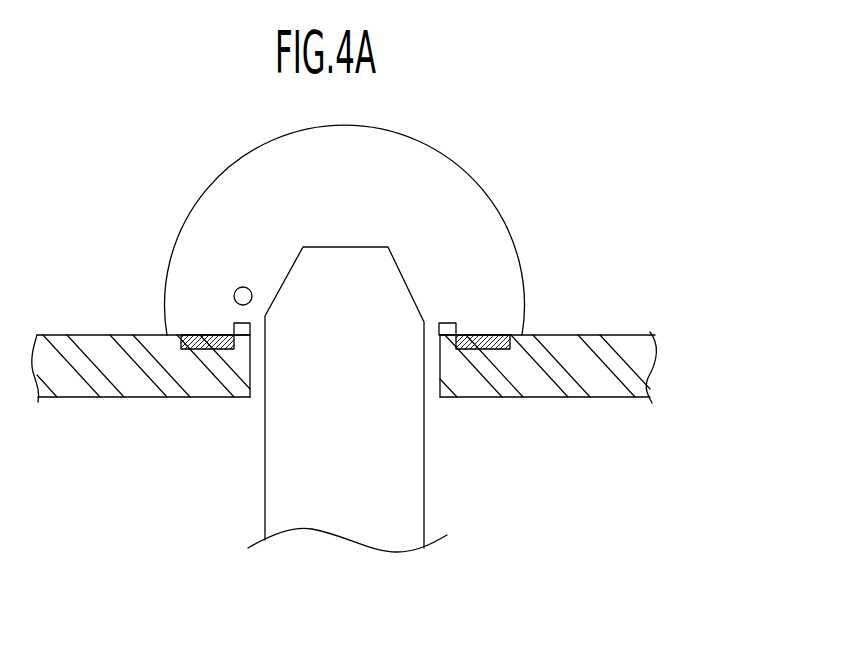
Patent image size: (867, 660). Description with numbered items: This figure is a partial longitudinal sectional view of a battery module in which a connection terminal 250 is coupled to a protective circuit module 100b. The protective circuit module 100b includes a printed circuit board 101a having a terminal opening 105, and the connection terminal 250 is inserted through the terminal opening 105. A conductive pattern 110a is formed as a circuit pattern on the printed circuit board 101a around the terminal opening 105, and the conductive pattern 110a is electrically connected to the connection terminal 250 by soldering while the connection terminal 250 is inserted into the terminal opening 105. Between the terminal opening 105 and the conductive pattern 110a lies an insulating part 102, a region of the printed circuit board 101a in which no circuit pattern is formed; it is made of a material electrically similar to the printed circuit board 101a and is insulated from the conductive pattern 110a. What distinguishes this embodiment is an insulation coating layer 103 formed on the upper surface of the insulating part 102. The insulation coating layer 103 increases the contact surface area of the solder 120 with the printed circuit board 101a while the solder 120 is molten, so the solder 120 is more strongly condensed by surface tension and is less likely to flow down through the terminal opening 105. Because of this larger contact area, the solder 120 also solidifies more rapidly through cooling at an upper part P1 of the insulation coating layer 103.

The protective circuit module 100b is at (622, 298).
The printed circuit board 101a is at (112, 377).
The insulating part 102 is at (247, 340).
The insulation coating layer 103 is at (240, 323).
The terminal opening 105 is at (440, 368).
The conductive pattern 110a is at (197, 336).
The solder 120 is at (430, 227).
The connection terminal 250 is at (338, 520).
The upper part of the insulation coating layer P1 is at (242, 287).